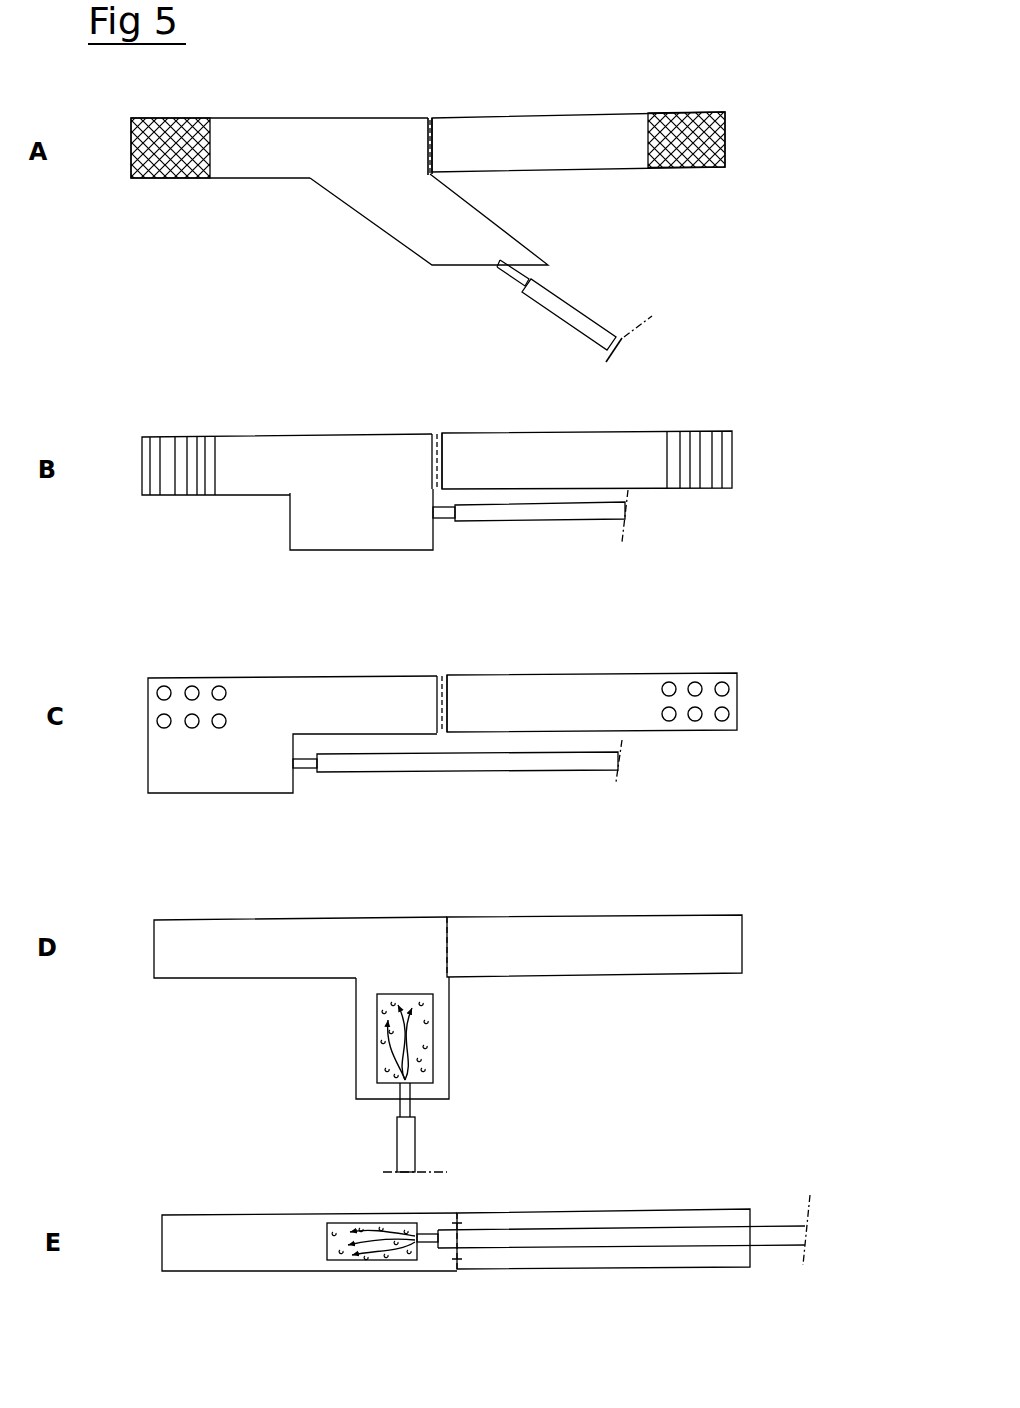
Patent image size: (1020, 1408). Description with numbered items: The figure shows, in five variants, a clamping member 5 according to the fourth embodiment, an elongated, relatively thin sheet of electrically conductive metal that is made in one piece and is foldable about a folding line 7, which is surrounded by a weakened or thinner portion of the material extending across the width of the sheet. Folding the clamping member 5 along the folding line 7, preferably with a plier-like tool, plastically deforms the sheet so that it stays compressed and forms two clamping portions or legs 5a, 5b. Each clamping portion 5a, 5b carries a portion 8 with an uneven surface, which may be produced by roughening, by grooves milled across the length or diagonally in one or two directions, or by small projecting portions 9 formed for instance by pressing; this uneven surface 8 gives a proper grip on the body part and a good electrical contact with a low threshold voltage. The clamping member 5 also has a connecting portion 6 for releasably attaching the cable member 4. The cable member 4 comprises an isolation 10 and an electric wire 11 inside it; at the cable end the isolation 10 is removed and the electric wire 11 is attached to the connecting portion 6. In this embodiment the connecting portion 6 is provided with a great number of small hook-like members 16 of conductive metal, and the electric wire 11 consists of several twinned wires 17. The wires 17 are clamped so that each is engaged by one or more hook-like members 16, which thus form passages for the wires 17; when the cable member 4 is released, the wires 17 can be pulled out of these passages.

The cable member 4 is at (634, 306).
The clamping member 5 is at (505, 96).
The clamping portion 5a is at (238, 128).
The clamping portion 5b is at (592, 132).
The connecting portion 6 is at (365, 213).
The folding line 7 is at (430, 118).
The uneven surface portion 8 is at (177, 163).
The projecting portions 9 is at (195, 695).
The isolation 10 is at (571, 318).
The electric wire 11 is at (512, 278).
The hook-like members 16 is at (405, 1035).
The wires 17 is at (395, 1000).